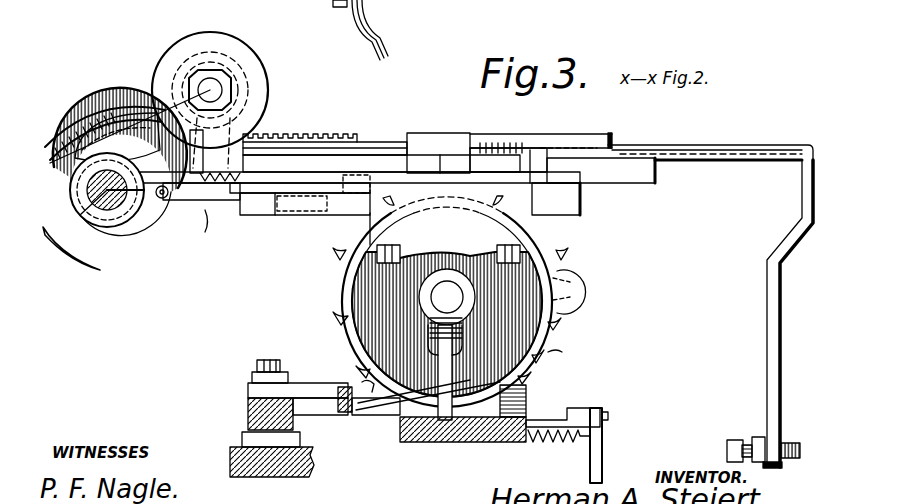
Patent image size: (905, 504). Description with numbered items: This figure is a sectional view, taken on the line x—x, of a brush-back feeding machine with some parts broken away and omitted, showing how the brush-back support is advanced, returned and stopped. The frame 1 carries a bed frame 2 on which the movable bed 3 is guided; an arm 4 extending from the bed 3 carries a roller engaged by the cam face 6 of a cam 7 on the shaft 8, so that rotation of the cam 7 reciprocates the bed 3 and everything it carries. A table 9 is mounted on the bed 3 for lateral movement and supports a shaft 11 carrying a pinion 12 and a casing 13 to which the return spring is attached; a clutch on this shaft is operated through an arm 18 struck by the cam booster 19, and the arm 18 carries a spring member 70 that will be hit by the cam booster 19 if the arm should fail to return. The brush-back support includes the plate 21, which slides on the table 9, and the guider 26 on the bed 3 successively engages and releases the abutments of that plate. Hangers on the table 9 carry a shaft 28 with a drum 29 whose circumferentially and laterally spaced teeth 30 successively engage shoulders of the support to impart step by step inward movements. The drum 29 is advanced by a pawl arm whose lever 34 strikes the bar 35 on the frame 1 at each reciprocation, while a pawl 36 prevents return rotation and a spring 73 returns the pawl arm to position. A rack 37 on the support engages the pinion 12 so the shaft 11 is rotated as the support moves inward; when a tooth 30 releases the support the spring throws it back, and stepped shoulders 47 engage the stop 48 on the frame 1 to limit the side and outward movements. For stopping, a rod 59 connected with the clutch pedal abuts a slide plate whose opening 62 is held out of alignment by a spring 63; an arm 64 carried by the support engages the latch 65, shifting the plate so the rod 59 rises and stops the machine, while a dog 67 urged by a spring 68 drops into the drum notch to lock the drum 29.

The frame 1 is at (447, 302).
The bed frame 2 is at (560, 205).
The movable bed 3 is at (292, 208).
The arm 4 is at (215, 198).
The cam face 6 is at (96, 263).
The cam 7 is at (82, 120).
The shaft 8 is at (110, 262).
The table 9 is at (580, 178).
The shaft 11 is at (210, 90).
The pinion 12 is at (220, 232).
The casing 13 is at (208, 33).
The arm 18 is at (137, 115).
The cam booster 19 is at (158, 215).
The plate 21 is at (460, 150).
The guider 26 is at (445, 160).
The shaft 28 is at (445, 297).
The drum 29 is at (545, 352).
The teeth 30 is at (345, 252).
The lever 34 is at (380, 415).
The bar 35 is at (332, 400).
The pawl 36 is at (565, 282).
The rack 37 is at (308, 140).
The stepped shoulders 47 is at (548, 148).
The stop 48 is at (520, 180).
The rod 59 is at (362, 22).
The opening 62 is at (545, 418).
The spring 63 is at (543, 440).
The arm 64 is at (767, 313).
The latch 65 is at (602, 440).
The dog 67 is at (430, 442).
The spring 68 is at (436, 338).
The spring member 70 is at (78, 255).
The spring 73 is at (362, 382).